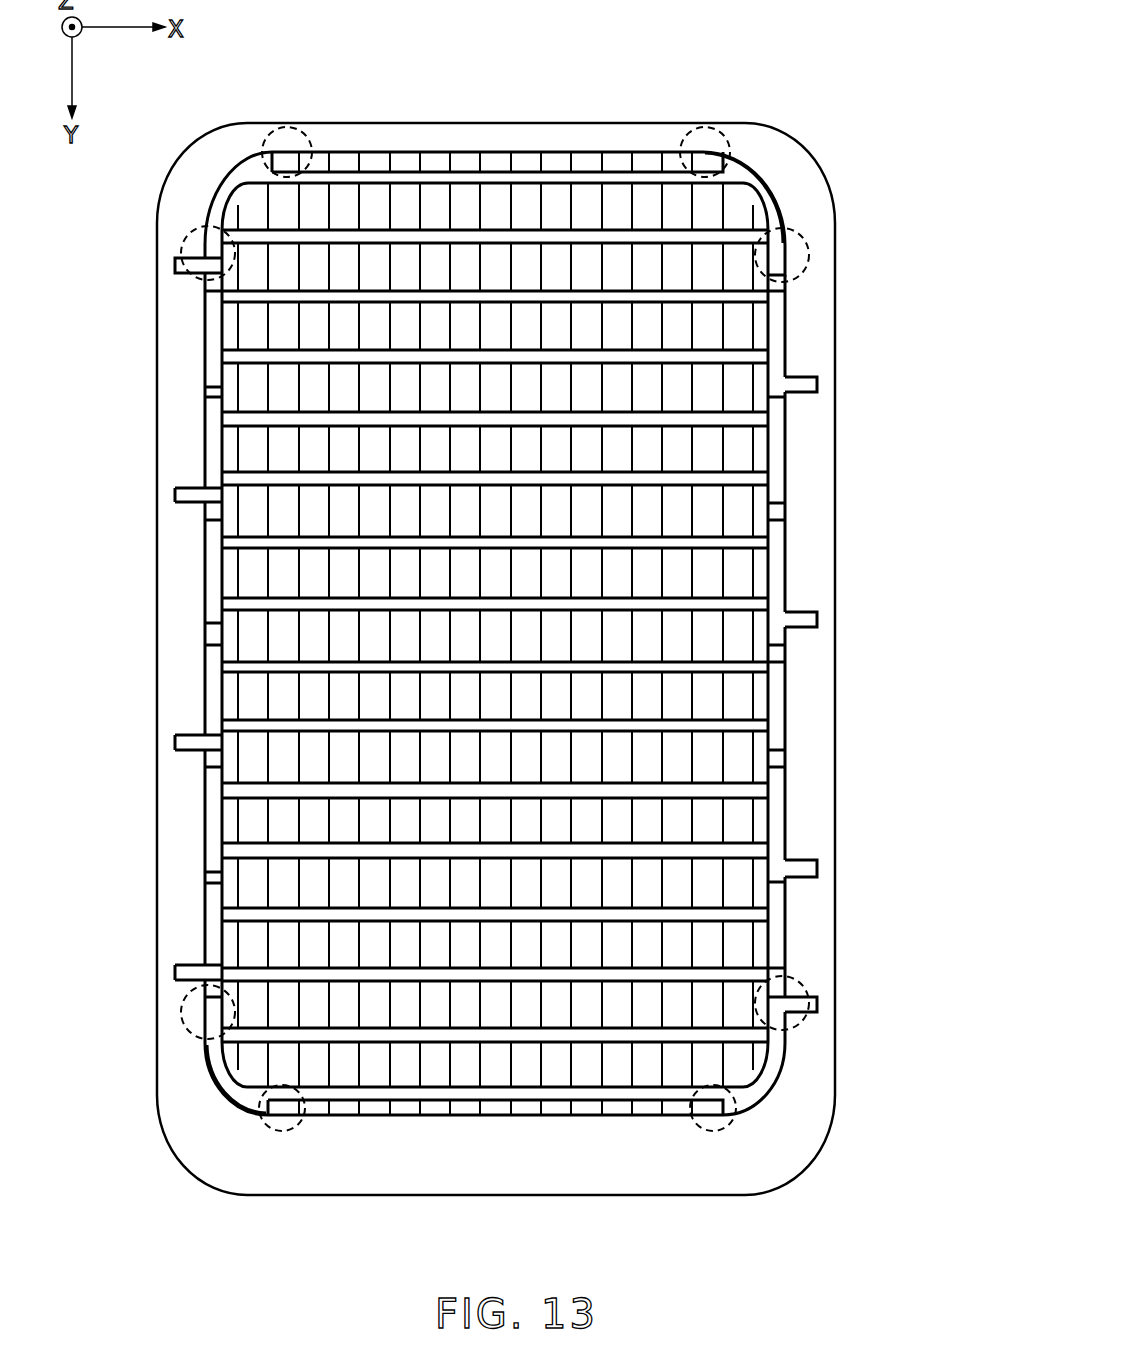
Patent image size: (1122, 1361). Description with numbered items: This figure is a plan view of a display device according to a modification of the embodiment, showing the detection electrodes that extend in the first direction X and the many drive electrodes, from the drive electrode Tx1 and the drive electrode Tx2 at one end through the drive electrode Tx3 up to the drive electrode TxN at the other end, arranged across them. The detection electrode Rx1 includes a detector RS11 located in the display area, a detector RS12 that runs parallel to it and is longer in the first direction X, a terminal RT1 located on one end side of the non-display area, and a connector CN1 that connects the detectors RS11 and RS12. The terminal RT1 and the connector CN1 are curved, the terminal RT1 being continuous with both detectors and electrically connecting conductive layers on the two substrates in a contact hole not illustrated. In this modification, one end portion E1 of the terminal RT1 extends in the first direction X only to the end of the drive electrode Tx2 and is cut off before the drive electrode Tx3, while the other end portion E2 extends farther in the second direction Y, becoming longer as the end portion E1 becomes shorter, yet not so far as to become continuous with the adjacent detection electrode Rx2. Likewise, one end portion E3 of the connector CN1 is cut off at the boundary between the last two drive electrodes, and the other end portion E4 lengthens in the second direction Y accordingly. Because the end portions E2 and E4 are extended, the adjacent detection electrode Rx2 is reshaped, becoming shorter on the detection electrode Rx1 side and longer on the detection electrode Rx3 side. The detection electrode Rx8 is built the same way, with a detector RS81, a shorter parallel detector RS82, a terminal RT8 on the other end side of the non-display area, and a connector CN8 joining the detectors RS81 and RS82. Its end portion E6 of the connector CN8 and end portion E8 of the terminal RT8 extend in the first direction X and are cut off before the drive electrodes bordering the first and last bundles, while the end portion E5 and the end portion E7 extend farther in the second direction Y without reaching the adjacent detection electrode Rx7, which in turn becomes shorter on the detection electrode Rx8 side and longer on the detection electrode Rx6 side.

The detection electrode Rx1 is at (210, 174).
The detection electrode Rx2 is at (196, 345).
The detection electrode Rx3 is at (196, 453).
The detection electrode Rx6 is at (197, 785).
The detection electrode Rx7 is at (196, 930).
The detection electrode Rx8 is at (780, 1092).
The detector RS11 is at (585, 172).
The detector RS12 is at (465, 228).
The detector RS81 is at (405, 1045).
The detector RS82 is at (498, 1100).
The connector CN1 is at (755, 190).
The connector CN8 is at (227, 1075).
The terminal RT1 is at (175, 266).
The terminal RT8 is at (817, 1010).
The end portion E1 is at (268, 135).
The end portion E2 is at (200, 240).
The end portion E3 is at (728, 135).
The end portion E4 is at (808, 257).
The end portion E5 is at (190, 1003).
The end portion E6 is at (282, 1131).
The end portion E7 is at (785, 982).
The end portion E8 is at (713, 1131).
The drive electrode Tx1 is at (222, 877).
The drive electrode Tx2 is at (252, 830).
The drive electrode Tx3 is at (282, 817).
The drive electrode TxN is at (772, 758).